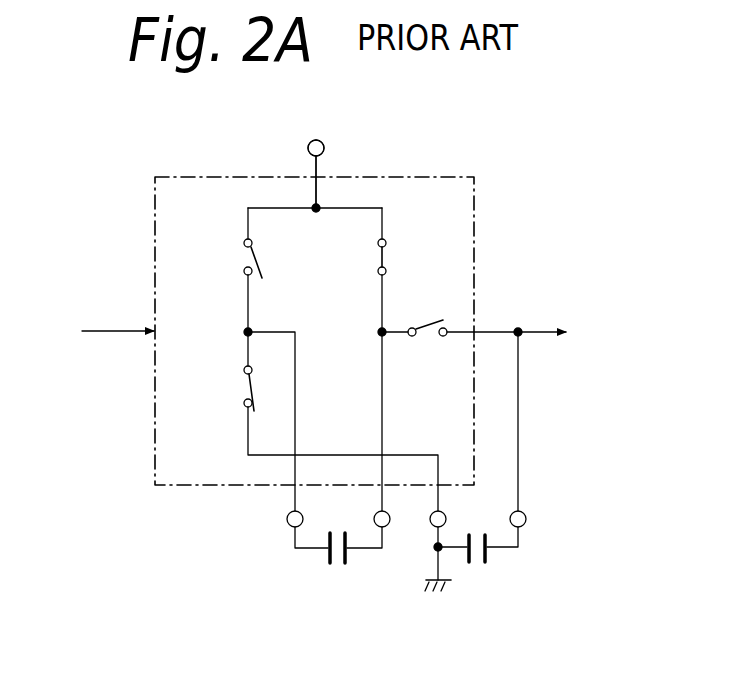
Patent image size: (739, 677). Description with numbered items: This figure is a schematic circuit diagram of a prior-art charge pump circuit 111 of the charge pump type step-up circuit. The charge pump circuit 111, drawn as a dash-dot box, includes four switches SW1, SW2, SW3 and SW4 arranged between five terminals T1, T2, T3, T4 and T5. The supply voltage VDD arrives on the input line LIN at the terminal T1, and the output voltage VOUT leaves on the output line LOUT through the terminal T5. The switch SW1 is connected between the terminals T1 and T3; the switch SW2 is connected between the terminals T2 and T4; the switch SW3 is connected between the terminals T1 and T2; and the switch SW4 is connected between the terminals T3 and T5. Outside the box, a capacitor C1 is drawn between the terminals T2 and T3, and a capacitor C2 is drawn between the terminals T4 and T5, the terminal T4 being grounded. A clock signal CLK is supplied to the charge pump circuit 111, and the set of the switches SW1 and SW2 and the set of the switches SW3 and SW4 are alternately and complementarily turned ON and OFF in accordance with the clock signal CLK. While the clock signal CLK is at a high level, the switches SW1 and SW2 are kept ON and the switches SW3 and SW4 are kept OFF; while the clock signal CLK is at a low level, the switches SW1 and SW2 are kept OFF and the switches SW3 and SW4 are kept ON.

The charge pump circuit 111 is at (203, 168).
The terminal T1 is at (324, 148).
The terminal T2 is at (286, 520).
The terminal T3 is at (373, 515).
The terminal T4 is at (447, 517).
The terminal T5 is at (526, 522).
The switch SW1 is at (433, 244).
The switch SW2 is at (240, 387).
The switch SW3 is at (243, 255).
The switch SW4 is at (432, 347).
The capacitor C1 is at (327, 553).
The capacitor C2 is at (490, 553).
The input line LIN is at (312, 200).
The output line LOUT is at (490, 332).
The supply voltage VDD is at (325, 154).
The output voltage VOUT is at (581, 333).
The clock signal CLK is at (84, 331).